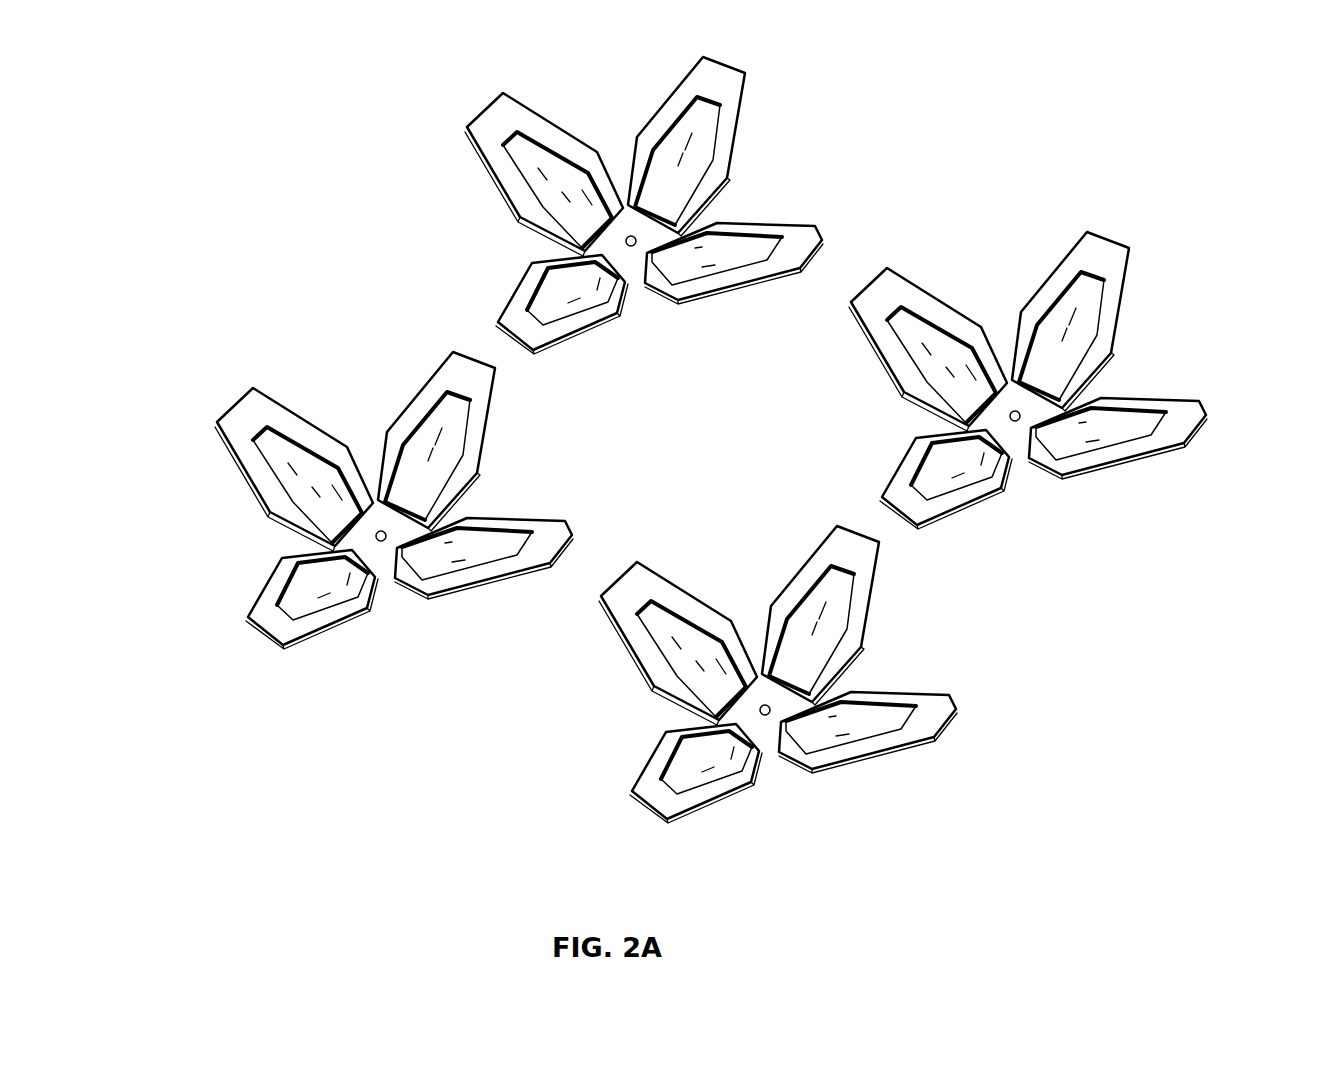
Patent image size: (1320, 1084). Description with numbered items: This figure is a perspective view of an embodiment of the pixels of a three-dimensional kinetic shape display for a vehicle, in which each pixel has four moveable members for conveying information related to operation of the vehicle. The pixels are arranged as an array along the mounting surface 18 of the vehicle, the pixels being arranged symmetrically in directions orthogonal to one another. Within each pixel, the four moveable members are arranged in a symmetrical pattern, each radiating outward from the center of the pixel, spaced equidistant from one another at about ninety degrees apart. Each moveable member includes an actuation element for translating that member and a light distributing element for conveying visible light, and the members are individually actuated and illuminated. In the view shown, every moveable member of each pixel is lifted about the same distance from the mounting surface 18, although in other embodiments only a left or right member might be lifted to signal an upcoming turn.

The mounting surface 18 is at (1112, 611).